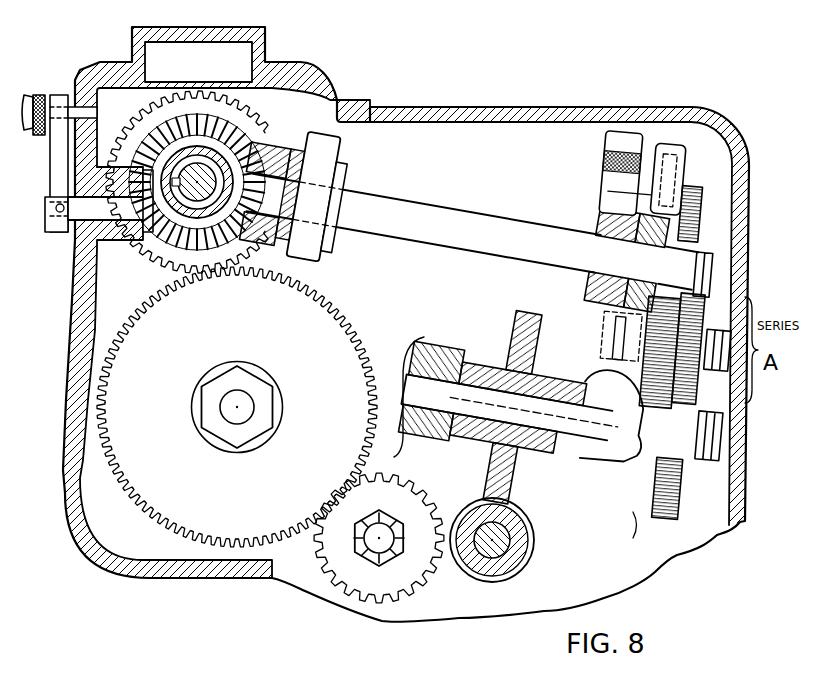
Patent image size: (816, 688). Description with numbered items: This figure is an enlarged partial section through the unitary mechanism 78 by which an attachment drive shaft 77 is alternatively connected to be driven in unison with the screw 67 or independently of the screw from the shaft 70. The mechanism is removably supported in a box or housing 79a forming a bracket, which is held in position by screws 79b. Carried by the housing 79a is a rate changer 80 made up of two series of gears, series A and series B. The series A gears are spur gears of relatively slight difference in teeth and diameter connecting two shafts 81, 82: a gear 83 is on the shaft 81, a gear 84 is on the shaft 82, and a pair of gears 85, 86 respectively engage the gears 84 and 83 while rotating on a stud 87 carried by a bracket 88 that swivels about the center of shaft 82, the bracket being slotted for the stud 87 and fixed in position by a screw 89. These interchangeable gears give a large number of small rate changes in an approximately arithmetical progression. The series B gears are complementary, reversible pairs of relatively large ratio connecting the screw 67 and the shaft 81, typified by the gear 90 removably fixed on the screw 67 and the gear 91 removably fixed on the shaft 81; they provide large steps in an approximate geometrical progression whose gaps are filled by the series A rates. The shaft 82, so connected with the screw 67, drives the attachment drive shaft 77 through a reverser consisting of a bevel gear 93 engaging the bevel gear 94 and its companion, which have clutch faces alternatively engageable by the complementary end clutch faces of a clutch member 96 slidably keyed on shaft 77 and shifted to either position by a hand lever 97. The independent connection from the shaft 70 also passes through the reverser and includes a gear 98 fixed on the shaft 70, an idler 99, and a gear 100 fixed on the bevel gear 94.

The screw 67 is at (467, 565).
The shaft 70 is at (378, 540).
The attachment drive shaft 77 is at (200, 270).
The unitary mechanism 78 is at (398, 163).
The box or housing 79a is at (298, 62).
The screws 79b is at (592, 106).
The rate changer 80 is at (618, 262).
The shaft 81 is at (613, 437).
The shaft 82 is at (432, 240).
The gear 83 is at (662, 516).
The gear 84 is at (693, 232).
The gear 85 is at (652, 392).
The gear 86 is at (698, 392).
The stud 87 is at (627, 333).
The bracket 88 is at (603, 170).
The screw 89 is at (685, 188).
The gear 90 is at (492, 582).
The gear 91 is at (512, 320).
The bevel gear 93 is at (270, 140).
The bevel gear 94 is at (170, 263).
The clutch member 96 is at (190, 150).
The hand lever 97 is at (40, 95).
The gear 98 is at (345, 586).
The idler 99 is at (162, 488).
The gear 100 is at (143, 262).